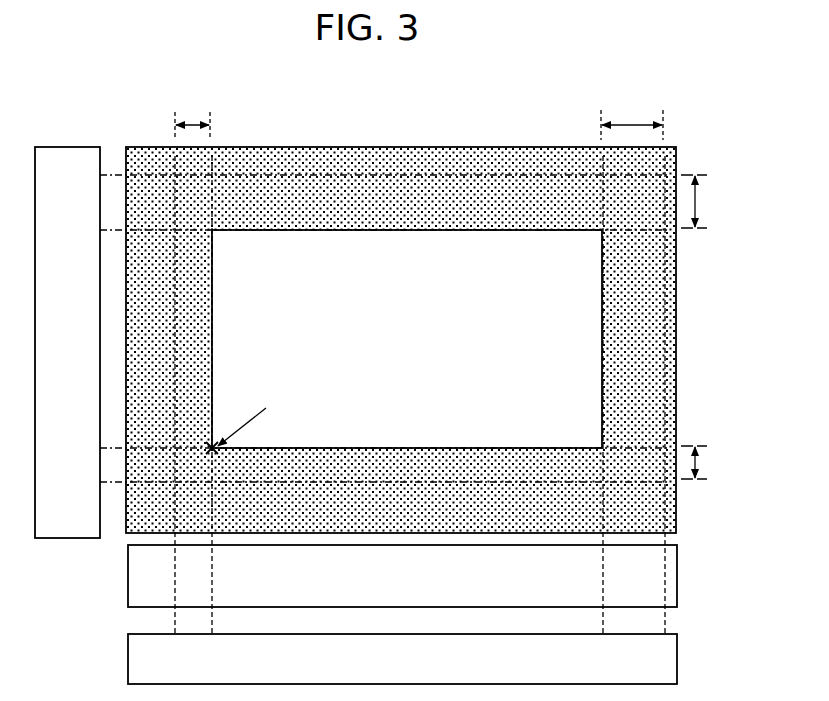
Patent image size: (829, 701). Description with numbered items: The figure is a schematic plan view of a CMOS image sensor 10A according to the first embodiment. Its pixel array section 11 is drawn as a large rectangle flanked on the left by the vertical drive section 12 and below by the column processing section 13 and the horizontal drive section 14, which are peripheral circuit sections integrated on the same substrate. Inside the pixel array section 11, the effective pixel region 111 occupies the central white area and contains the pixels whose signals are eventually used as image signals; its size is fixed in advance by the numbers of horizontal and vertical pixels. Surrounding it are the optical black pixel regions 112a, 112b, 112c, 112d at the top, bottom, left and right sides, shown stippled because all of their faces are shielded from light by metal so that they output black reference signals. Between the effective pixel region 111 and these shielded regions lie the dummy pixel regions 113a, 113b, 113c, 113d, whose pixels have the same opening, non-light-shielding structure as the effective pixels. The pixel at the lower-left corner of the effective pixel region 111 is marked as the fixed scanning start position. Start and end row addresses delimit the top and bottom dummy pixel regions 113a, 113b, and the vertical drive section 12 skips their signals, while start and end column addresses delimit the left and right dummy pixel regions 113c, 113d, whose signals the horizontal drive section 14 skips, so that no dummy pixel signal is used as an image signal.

The CMOS image sensor 10A is at (586, 48).
The pixel array section 11 is at (442, 333).
The vertical drive section 12 is at (62, 146).
The column processing section 13 is at (678, 578).
The horizontal drive section 14 is at (678, 662).
The effective pixel region 111 is at (590, 290).
The optical black pixel region 112a is at (481, 157).
The optical black pixel region 112b is at (558, 524).
The optical black pixel region 112c is at (163, 288).
The optical black pixel region 112d is at (666, 345).
The dummy pixel region 113a is at (700, 199).
The dummy pixel region 113b is at (700, 464).
The dummy pixel region 113c is at (191, 123).
The dummy pixel region 113d is at (630, 122).